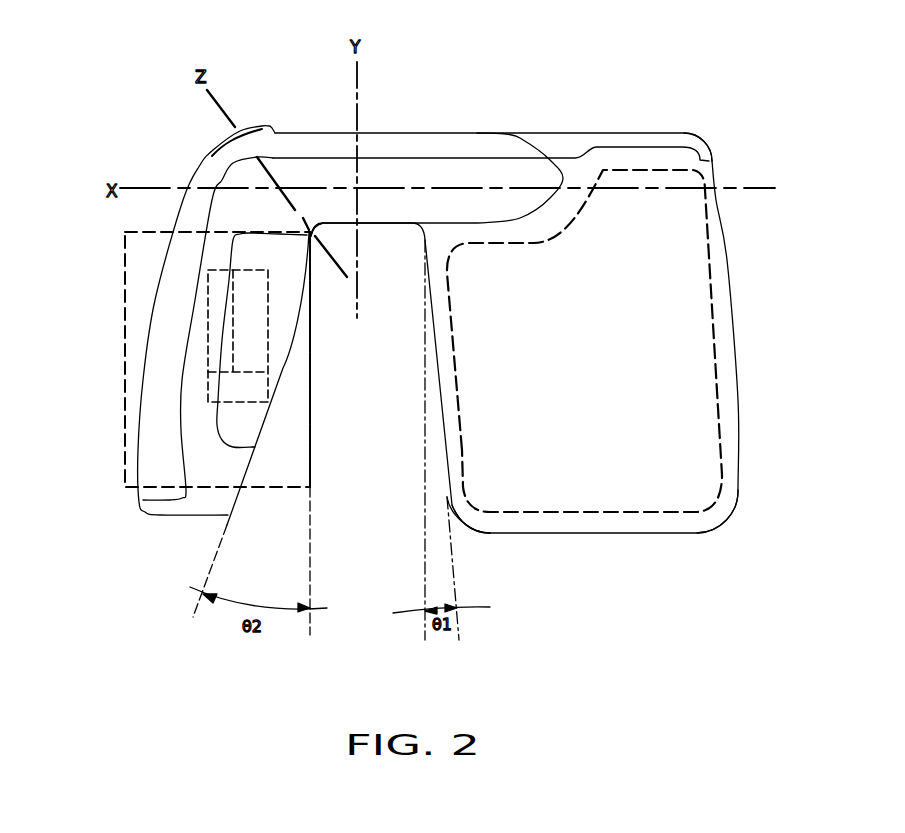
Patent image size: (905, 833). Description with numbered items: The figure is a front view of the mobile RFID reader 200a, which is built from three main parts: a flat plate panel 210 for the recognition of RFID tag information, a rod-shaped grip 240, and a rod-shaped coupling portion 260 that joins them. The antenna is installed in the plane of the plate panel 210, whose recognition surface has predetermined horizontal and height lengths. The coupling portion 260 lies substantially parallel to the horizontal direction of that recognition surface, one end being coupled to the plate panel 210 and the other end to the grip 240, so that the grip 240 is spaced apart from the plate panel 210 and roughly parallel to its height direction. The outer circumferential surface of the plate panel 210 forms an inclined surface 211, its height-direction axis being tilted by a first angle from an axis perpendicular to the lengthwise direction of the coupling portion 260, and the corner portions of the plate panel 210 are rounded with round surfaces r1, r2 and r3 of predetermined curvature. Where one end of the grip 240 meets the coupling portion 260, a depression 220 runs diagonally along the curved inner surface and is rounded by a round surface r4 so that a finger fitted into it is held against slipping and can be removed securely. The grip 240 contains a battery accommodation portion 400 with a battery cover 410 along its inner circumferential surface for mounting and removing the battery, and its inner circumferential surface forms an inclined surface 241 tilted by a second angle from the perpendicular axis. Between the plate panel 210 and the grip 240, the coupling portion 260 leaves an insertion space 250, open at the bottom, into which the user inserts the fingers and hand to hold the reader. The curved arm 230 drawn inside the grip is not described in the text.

The mobile RFID reader 200a is at (587, 56).
The plate panel for the recognition of RFID tag information 210 is at (690, 486).
The inclined surface 211 is at (437, 450).
The depression 220 is at (318, 231).
The curved inner arm 230 is at (200, 367).
The grip 240 is at (137, 432).
The inclined surface 241 is at (278, 419).
The insertion space 250 is at (380, 379).
The coupling portion 260 is at (387, 177).
The battery accommodation portion 400 is at (147, 250).
The battery cover 410 is at (267, 258).
The round surface r1 is at (698, 143).
The round surface r2 is at (730, 517).
The round surface r3 is at (450, 503).
The round surface r4 is at (310, 232).